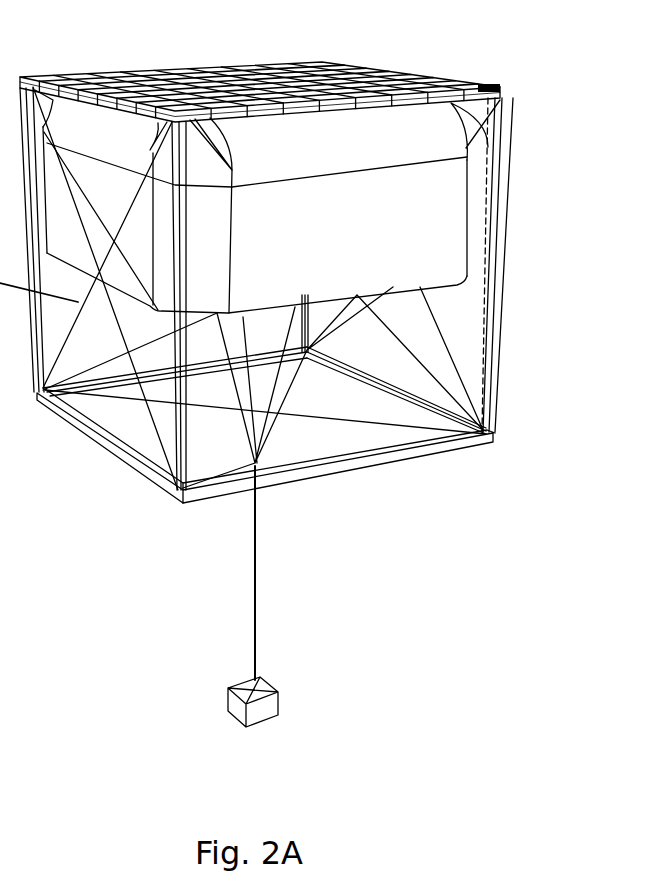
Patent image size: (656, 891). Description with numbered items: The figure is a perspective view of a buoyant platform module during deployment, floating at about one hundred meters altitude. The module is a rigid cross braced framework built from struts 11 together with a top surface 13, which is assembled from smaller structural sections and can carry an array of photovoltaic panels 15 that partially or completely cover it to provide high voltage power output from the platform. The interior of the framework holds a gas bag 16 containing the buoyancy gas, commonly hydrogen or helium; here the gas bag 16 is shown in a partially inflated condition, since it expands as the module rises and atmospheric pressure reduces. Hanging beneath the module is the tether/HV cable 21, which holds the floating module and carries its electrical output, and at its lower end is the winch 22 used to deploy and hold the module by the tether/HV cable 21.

The struts 11 is at (505, 263).
The top surface 13 is at (391, 70).
The photovoltaic panels 15 is at (500, 87).
The gas bag 16 is at (325, 298).
The tether/HV cable 21 is at (255, 596).
The winch 22 is at (277, 715).